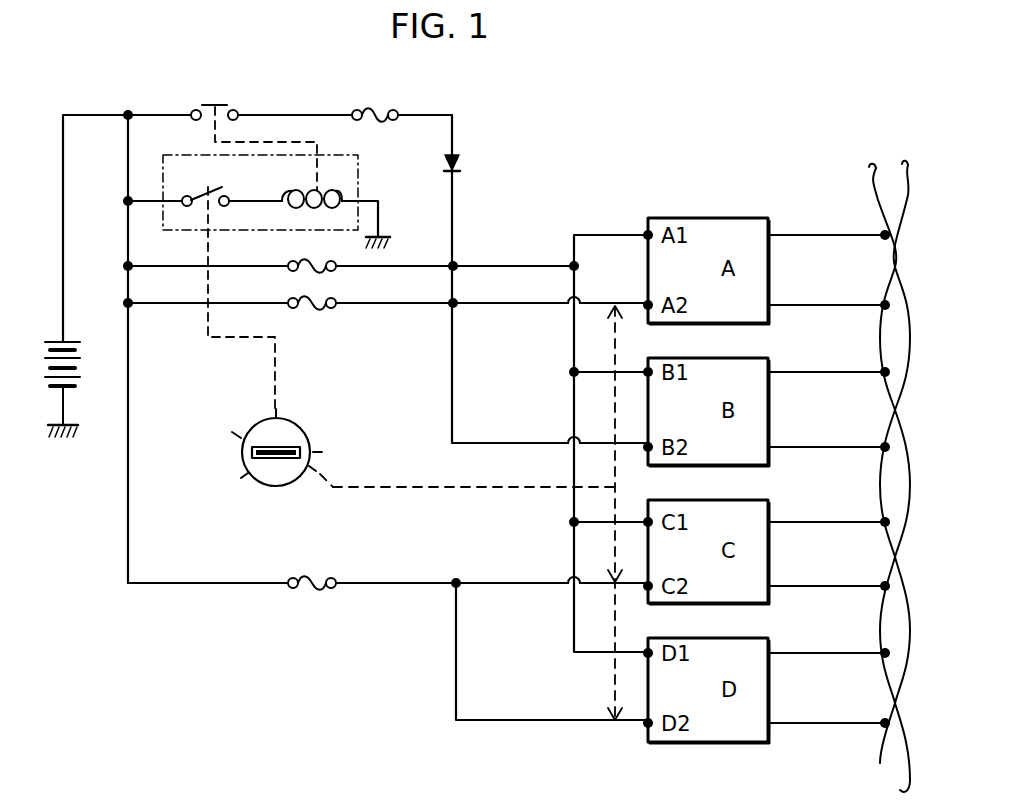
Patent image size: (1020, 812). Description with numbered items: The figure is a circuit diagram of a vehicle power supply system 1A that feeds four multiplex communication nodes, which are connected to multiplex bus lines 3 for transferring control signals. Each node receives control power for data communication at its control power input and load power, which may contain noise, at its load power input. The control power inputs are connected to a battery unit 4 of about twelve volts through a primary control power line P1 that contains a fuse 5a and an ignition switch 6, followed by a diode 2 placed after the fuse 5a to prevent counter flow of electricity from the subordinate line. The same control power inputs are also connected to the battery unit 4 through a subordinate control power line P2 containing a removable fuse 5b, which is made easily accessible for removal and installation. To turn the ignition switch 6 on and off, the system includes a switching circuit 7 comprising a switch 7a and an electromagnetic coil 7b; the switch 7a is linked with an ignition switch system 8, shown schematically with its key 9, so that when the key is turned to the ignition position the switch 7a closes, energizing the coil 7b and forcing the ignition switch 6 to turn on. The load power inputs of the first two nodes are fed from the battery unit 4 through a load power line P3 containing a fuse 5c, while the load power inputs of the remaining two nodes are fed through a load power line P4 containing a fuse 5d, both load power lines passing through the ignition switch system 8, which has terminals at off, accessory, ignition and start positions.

The power supply system 1A is at (520, 233).
The diode 2 is at (460, 159).
The multiplex bus lines 3 is at (893, 183).
The battery unit 4 is at (100, 332).
The fuse 5a is at (366, 106).
The removable fuse 5b is at (316, 273).
The fuse 5c is at (316, 310).
The fuse 5d is at (306, 578).
The ignition switch 6 is at (226, 103).
The switching circuit 7 is at (269, 269).
The switch 7a is at (193, 205).
The electromagnetic coil 7b is at (340, 191).
The ignition switch system 8 is at (250, 448).
The key 9 is at (274, 458).
The primary control power line P1 is at (431, 112).
The subordinate control power line P2 is at (394, 262).
The load power line P3 is at (380, 316).
The load power line P4 is at (406, 580).